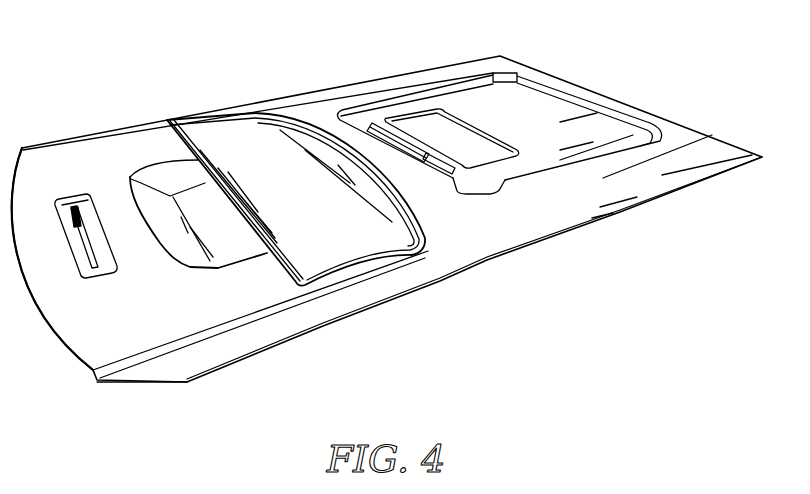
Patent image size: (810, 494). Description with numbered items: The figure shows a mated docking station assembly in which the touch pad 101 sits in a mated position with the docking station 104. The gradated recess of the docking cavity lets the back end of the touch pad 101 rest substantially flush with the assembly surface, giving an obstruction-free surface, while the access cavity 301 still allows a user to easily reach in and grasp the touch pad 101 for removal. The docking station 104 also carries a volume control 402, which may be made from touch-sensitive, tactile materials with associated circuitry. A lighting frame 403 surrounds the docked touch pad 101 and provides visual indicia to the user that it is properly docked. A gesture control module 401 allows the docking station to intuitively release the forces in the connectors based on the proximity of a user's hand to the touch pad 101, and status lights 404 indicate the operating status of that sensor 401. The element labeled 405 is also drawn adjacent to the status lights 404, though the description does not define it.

The touch pad 101 is at (323, 240).
The docking station 104 is at (173, 300).
The access cavity 301 is at (155, 208).
The gesture control module 401 is at (415, 135).
The volume control 402 is at (95, 278).
The lighting frame 403 is at (210, 207).
The status lights 404 is at (452, 177).
The opening 405 is at (500, 167).